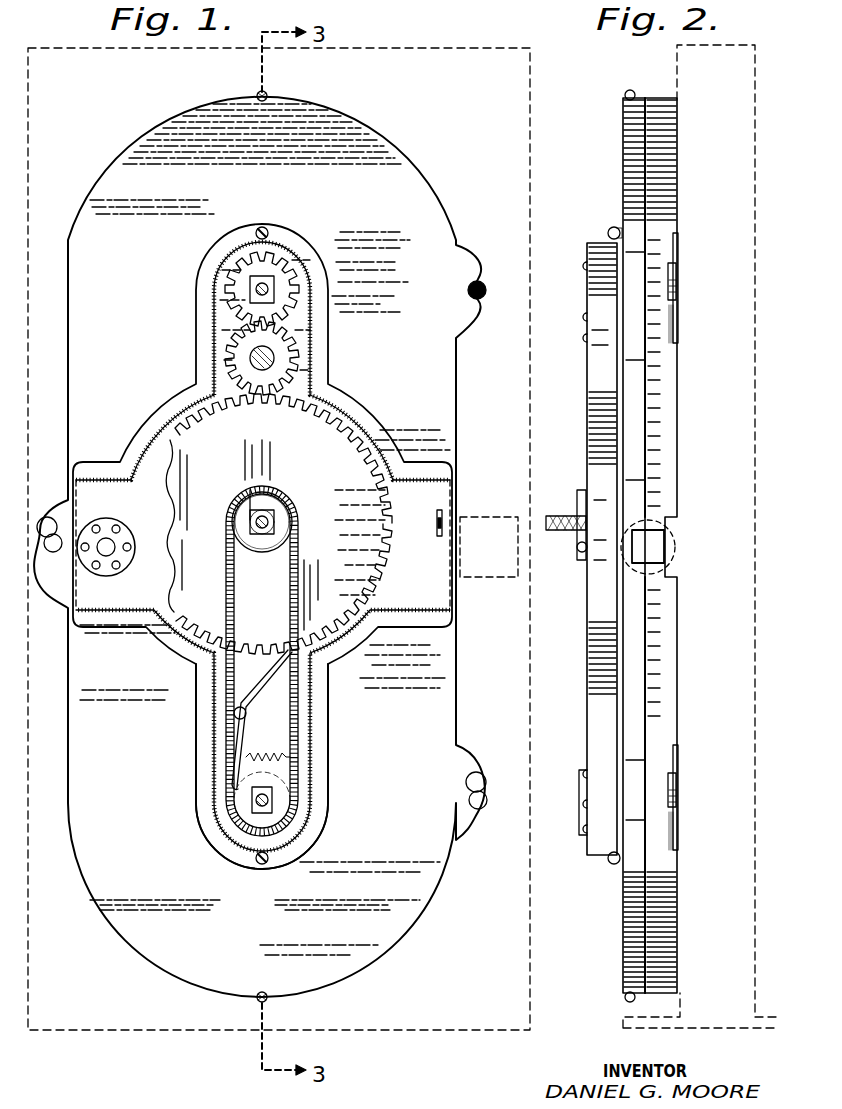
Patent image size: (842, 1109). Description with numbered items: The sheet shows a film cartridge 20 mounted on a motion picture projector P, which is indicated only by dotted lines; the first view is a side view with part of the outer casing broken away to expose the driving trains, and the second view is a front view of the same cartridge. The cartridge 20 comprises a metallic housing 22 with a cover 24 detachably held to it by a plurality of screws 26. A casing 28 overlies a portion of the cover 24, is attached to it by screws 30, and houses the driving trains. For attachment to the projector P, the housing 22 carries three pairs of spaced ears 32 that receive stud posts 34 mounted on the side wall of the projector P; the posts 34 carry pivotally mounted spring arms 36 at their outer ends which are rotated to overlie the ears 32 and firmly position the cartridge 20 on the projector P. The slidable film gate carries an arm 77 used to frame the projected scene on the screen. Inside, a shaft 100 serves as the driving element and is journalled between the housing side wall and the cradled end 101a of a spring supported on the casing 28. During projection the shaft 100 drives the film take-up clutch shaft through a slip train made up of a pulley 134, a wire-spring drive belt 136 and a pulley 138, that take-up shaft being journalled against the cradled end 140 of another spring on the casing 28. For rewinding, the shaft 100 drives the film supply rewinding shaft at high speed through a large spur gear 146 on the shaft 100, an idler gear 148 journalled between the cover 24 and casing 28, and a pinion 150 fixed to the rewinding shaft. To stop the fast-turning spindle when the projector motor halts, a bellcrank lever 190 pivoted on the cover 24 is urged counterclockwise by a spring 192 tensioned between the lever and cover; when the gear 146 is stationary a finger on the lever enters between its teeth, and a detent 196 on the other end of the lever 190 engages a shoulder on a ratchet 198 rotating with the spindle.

In FIG. 1, the cartridge 20 is at (259, 547).
In FIG. 2, the metallic housing 22 is at (660, 172).
In FIG. 1, the cover 24 is at (424, 228).
In FIG. 2, the cover 24 is at (628, 170).
In FIG. 1, the screws 26 is at (268, 93).
In FIG. 2, the screws 26 is at (634, 92).
In FIG. 1, the casing 28 is at (322, 334).
In FIG. 2, the casing 28 is at (596, 378).
In FIG. 1, the screws 30 is at (262, 226).
In FIG. 2, the screws 30 is at (612, 232).
In FIG. 1, the ears 32 is at (476, 272).
In FIG. 2, the ears 32 is at (677, 265).
In FIG. 1, the stud posts 34 is at (488, 292).
In FIG. 2, the stud posts 34 is at (678, 291).
In FIG. 1, the spring arms 36 is at (472, 780).
In FIG. 2, the spring arms 36 is at (673, 278).
In FIG. 1, the arm 77 is at (444, 521).
In FIG. 2, the arm 77 is at (555, 516).
In FIG. 1, the shaft 100 is at (268, 510).
In FIG. 1, the cradled end of spring 101a is at (278, 530).
In FIG. 1, the pulley 134 is at (250, 498).
In FIG. 1, the wire-spring drive belt 136 is at (297, 592).
In FIG. 1, the pulley 138 is at (320, 780).
In FIG. 1, the cradled end of spring 140 is at (276, 802).
In FIG. 1, the large spur gear 146 is at (347, 455).
In FIG. 1, the idler gear 148 is at (280, 370).
In FIG. 1, the pinion 150 is at (278, 285).
In FIG. 1, the bellcrank lever 190 is at (248, 690).
In FIG. 1, the spring 192 is at (286, 754).
In FIG. 1, the detent 196 is at (228, 846).
In FIG. 1, the ratchet 198 is at (245, 905).
In FIG. 1, the projector P is at (476, 46).
In FIG. 2, the projector P is at (752, 272).